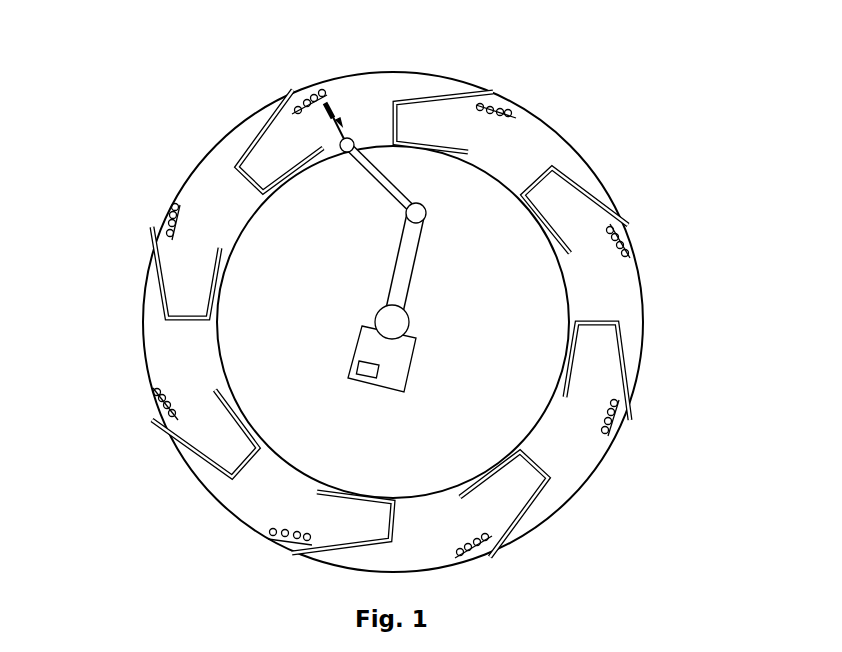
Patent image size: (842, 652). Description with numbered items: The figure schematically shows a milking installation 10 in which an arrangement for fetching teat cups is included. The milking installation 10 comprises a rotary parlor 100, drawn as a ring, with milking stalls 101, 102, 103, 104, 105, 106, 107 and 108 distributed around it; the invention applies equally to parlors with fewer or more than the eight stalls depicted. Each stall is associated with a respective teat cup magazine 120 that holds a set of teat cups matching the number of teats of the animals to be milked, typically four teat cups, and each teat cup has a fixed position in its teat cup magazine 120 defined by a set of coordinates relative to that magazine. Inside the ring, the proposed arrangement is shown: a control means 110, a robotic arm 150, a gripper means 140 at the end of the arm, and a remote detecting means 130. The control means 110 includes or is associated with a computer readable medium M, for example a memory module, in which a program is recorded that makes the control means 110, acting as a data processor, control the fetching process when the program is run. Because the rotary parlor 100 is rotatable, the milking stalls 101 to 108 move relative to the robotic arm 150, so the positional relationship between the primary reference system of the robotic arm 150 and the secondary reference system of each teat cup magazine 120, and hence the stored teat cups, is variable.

The milking installation 10 is at (142, 64).
The rotary parlor 100 is at (555, 130).
The milking stall 101 is at (253, 140).
The milking stall 102 is at (162, 287).
The milking stall 103 is at (200, 457).
The milking stall 104 is at (332, 552).
The milking stall 105 is at (527, 513).
The milking stall 106 is at (622, 353).
The milking stall 107 is at (580, 187).
The milking stall 108 is at (423, 100).
The control means 110 is at (410, 362).
The computer readable medium M is at (368, 374).
The teat cup magazine 120 is at (307, 90).
The remote detecting means 130 is at (342, 128).
The gripper means 140 is at (333, 95).
The robotic arm 150 is at (372, 177).